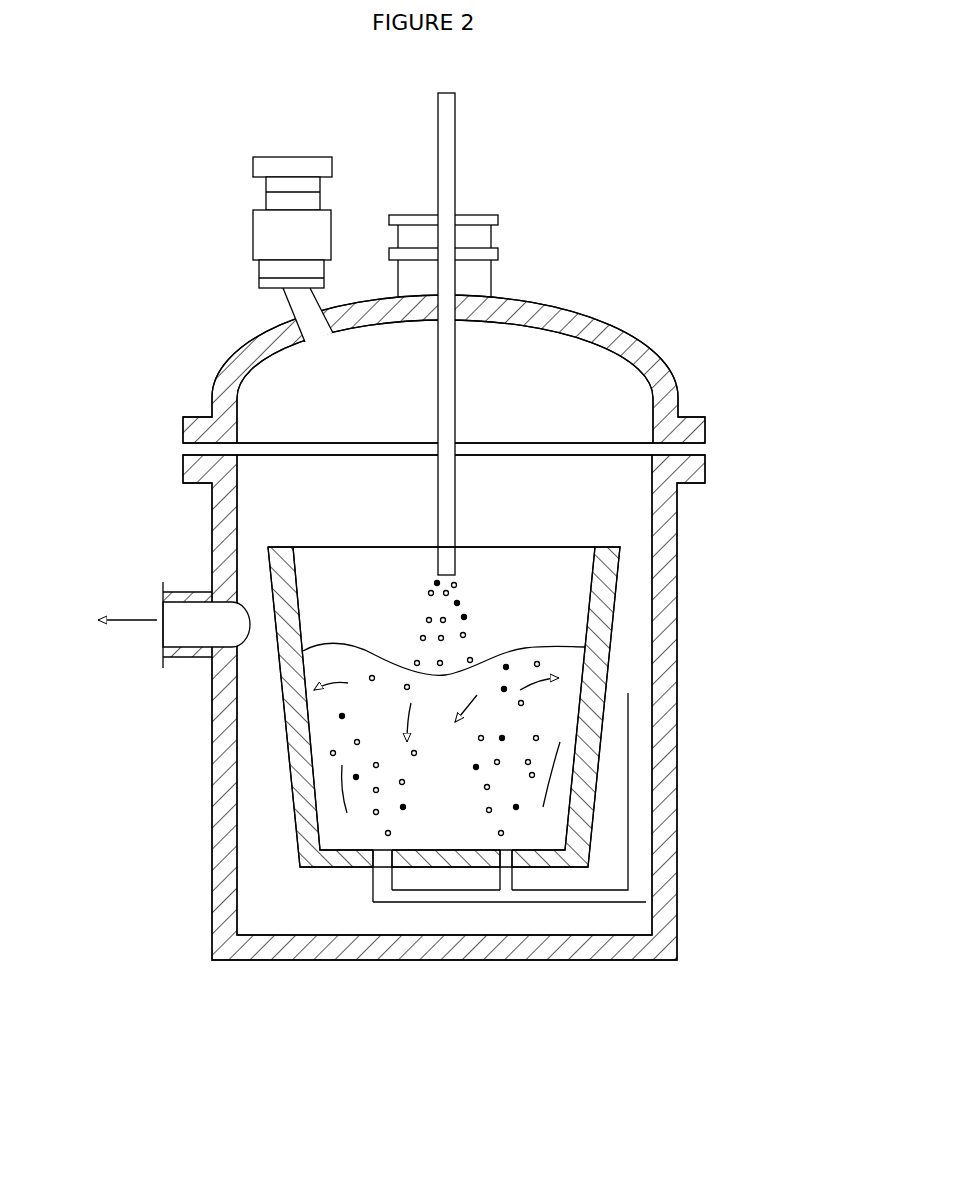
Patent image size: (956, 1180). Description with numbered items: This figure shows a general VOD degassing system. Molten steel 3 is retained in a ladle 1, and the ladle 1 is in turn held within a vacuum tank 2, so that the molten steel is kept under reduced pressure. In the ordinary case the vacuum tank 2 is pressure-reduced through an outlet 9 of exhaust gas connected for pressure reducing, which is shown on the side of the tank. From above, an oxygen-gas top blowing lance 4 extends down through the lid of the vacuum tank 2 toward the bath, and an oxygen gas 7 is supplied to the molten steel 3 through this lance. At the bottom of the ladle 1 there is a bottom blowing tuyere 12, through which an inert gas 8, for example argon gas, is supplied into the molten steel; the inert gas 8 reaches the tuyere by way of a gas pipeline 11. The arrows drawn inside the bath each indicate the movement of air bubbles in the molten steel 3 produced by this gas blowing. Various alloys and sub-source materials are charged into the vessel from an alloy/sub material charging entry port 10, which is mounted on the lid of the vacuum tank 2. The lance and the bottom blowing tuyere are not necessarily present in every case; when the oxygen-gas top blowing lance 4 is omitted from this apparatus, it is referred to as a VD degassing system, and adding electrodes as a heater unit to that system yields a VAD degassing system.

The ladle 1 is at (605, 612).
The vacuum tank 2 is at (672, 320).
The molten steel 3 is at (557, 833).
The oxygen-gas top blowing lance 4 is at (447, 133).
The oxygen gas 7 is at (463, 618).
The inert gas 8 is at (534, 775).
The outlet of exhaust gas connected for pressure reducing 9 is at (146, 648).
The alloy/sub material charging entry port 10 is at (234, 237).
The gas pipeline 11 is at (437, 912).
The bottom blowing tuyere 12 is at (377, 877).